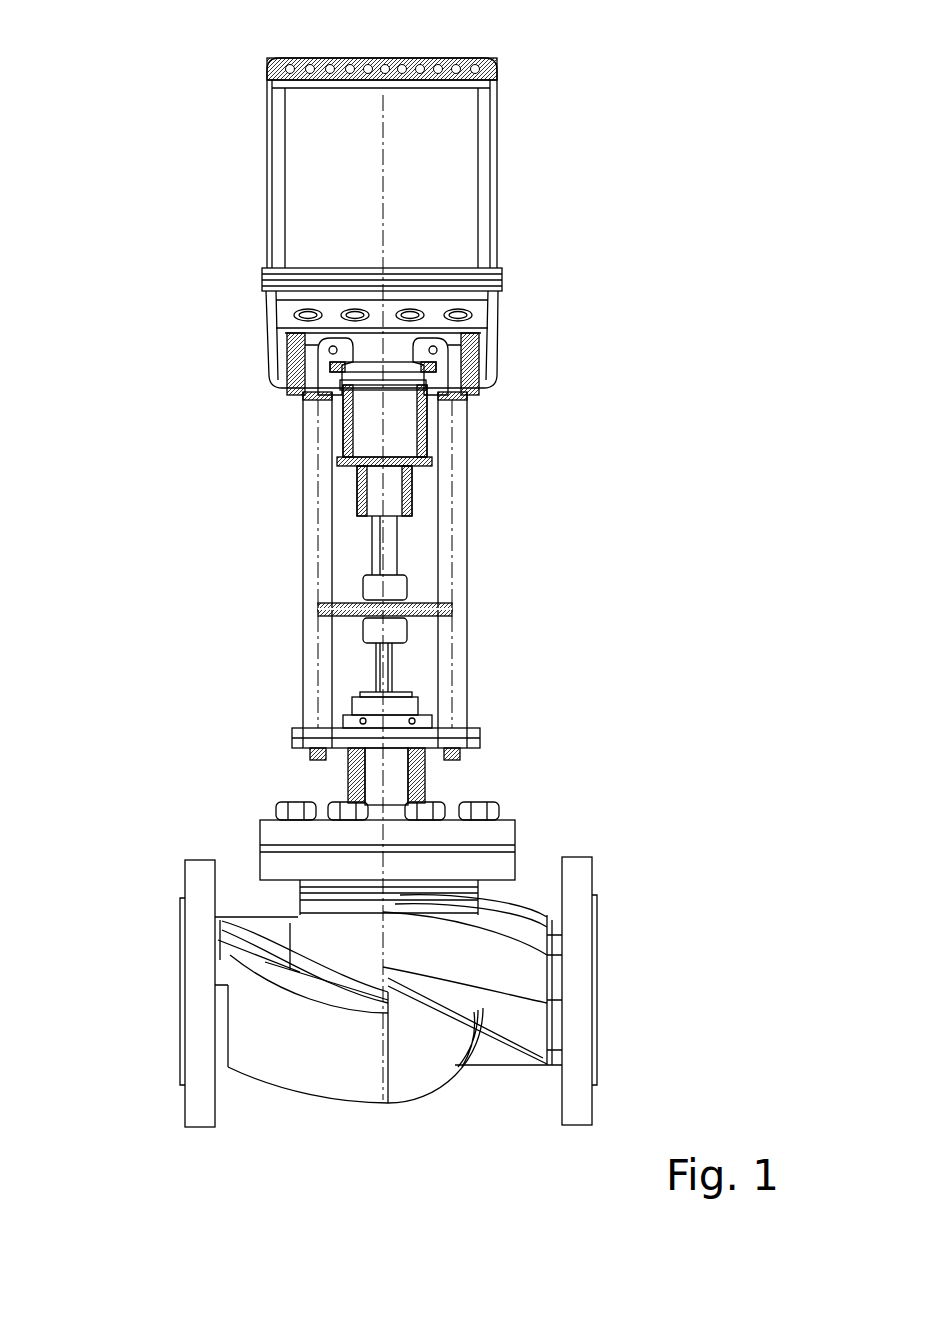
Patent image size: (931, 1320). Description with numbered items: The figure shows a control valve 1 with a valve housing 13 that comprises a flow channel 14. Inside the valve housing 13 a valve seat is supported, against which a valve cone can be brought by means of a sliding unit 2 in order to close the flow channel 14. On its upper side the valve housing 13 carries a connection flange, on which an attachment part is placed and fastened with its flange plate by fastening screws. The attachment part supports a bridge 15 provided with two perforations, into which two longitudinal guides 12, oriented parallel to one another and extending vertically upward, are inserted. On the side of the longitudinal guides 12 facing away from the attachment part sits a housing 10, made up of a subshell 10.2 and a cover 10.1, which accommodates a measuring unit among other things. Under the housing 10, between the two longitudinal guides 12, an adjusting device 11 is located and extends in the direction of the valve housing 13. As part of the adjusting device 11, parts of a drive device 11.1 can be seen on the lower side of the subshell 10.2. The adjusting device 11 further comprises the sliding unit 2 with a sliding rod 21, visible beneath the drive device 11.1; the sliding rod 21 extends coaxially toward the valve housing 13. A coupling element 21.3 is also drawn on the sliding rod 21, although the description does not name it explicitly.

The control valve 1 is at (184, 467).
The housing 10 is at (587, 207).
The cover 10.1 is at (303, 115).
The subshell 10.2 is at (268, 348).
The adjusting device 11 is at (587, 466).
The drive device 11.1 is at (344, 506).
The sliding unit 2 is at (514, 520).
The longitudinal guides 12 is at (310, 682).
The sliding rod 21 is at (395, 667).
The stem coupling plate 21.3 is at (375, 636).
The bridge 15 is at (482, 745).
The valve housing 13 is at (209, 819).
The flow channel 14 is at (597, 967).